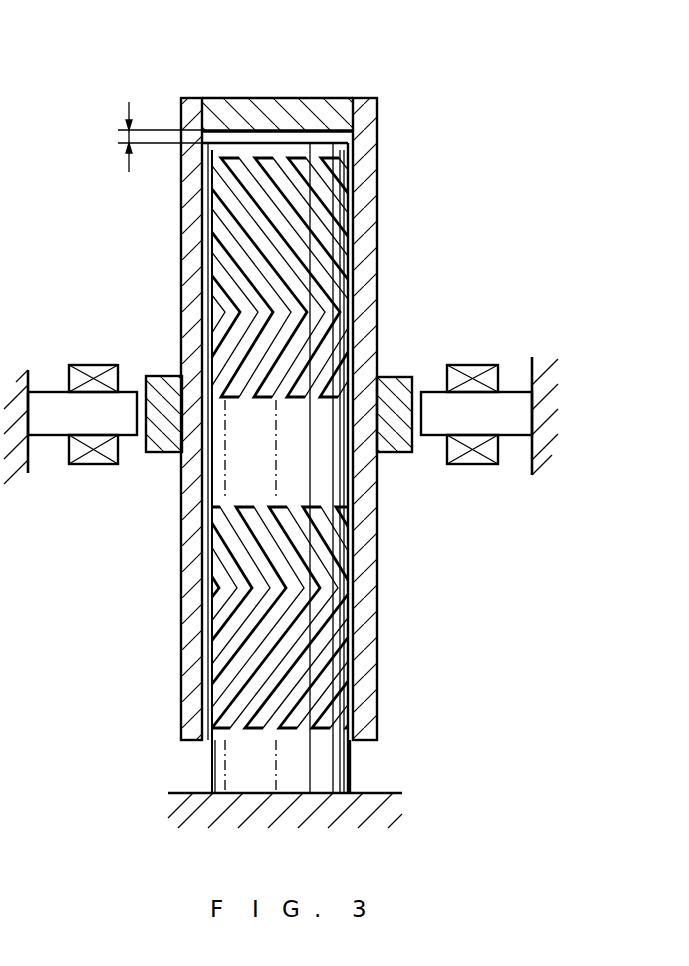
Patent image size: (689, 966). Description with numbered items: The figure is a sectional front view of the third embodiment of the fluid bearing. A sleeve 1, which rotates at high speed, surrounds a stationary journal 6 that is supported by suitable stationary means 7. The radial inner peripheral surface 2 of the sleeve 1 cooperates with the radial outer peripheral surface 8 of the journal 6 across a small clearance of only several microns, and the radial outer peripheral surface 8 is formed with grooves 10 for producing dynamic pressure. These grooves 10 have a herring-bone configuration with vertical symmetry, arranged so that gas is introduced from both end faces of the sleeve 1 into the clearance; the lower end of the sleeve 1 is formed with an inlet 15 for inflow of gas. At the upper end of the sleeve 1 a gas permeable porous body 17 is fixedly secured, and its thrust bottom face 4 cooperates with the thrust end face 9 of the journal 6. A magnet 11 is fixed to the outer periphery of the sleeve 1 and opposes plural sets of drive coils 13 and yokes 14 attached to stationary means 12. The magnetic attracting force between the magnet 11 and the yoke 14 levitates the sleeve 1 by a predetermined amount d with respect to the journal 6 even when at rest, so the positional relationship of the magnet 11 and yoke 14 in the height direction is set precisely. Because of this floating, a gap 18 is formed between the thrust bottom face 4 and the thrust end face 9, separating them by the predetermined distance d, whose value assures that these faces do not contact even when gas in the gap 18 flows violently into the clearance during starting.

The sleeve 1 is at (379, 175).
The radial inner peripheral surface 2 is at (356, 267).
The thrust bottom face 4 is at (314, 137).
The journal 6 is at (356, 768).
The stationary means 7 is at (385, 819).
The radial outer peripheral surface 8 is at (215, 275).
The thrust end face 9 is at (334, 146).
The grooves 10 is at (215, 205).
The magnet 11 is at (162, 376).
The stationary means 12 is at (545, 365).
The drive coils 13 is at (83, 365).
The yoke 14 is at (53, 436).
The inlet 15 is at (210, 742).
The gas permeable porous body 17 is at (237, 100).
The gap 18 is at (287, 137).
The predetermined distance d is at (152, 137).